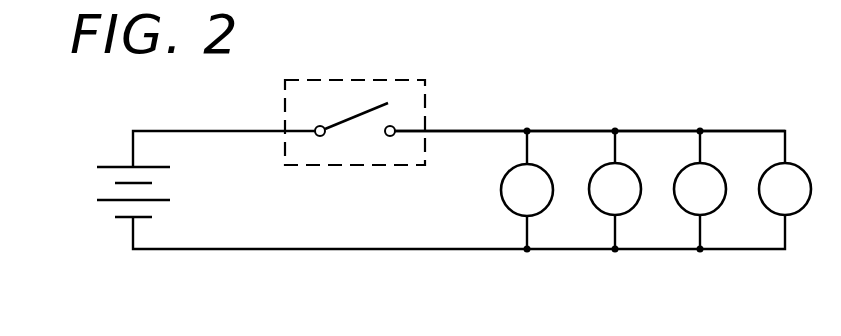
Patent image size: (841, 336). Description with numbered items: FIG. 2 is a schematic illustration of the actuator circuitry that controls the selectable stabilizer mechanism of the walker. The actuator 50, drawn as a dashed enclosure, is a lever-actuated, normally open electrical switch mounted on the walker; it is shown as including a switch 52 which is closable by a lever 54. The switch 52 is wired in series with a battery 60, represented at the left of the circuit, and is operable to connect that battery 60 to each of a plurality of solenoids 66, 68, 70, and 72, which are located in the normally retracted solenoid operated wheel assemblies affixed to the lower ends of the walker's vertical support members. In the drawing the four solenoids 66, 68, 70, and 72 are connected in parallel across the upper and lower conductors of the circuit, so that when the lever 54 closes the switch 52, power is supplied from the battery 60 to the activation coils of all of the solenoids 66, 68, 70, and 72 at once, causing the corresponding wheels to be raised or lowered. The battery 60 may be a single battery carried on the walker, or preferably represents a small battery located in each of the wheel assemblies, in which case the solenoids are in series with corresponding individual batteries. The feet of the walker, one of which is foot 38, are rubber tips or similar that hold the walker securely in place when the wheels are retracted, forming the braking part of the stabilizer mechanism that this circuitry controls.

The foot 38 is at (572, 0).
The actuator 50 is at (366, 78).
The switch 52 is at (388, 117).
The lever 54 is at (349, 124).
The battery 60 is at (82, 173).
The solenoid 66 is at (500, 190).
The solenoid 68 is at (602, 217).
The solenoid 70 is at (687, 217).
The solenoid 72 is at (772, 217).